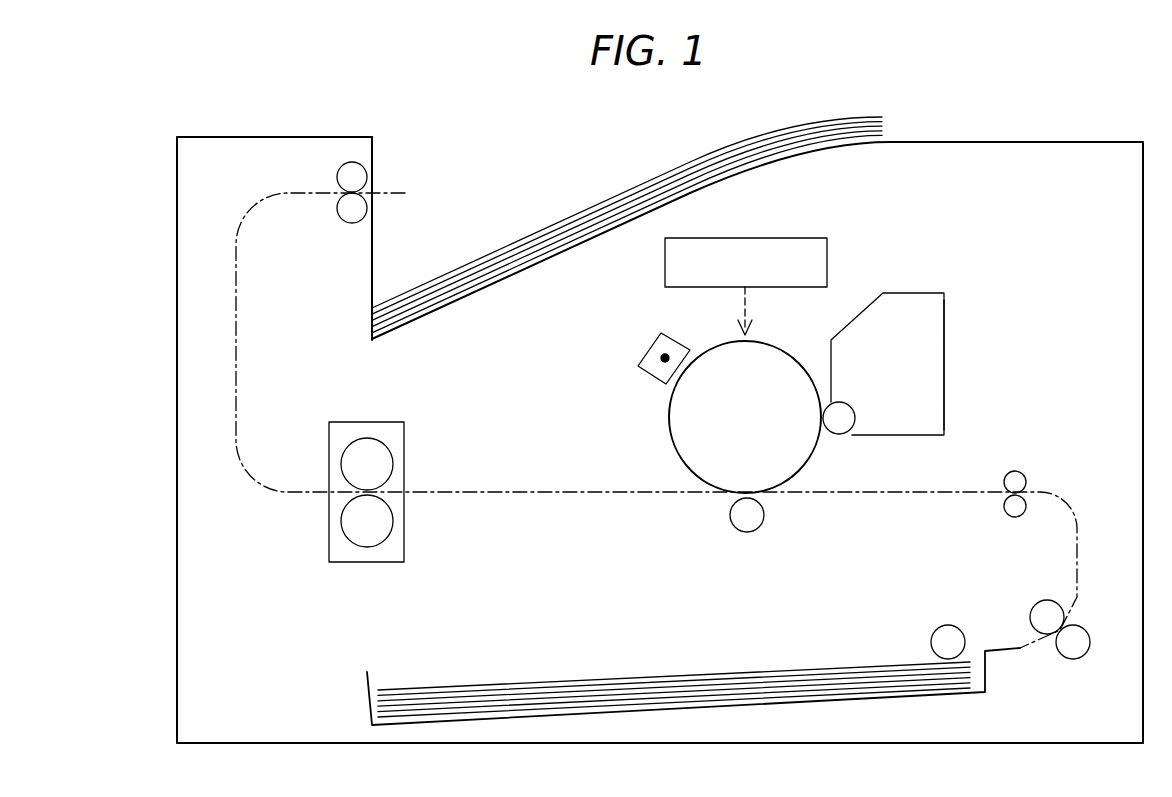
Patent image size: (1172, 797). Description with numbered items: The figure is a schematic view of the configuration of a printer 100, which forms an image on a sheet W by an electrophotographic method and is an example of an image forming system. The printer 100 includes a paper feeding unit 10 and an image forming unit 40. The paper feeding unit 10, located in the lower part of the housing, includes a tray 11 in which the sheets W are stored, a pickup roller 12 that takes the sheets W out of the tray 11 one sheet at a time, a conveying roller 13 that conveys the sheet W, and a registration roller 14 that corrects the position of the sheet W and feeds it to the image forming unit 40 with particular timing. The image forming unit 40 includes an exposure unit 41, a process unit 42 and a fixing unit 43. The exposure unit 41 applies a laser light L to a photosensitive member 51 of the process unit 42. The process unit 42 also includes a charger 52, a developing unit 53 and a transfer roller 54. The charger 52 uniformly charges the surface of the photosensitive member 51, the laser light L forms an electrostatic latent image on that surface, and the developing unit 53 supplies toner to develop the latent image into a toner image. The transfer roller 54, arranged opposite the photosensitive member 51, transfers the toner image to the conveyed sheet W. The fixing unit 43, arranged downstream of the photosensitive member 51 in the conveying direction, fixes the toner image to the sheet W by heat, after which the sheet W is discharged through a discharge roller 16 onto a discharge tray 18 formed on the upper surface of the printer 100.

The printer 100 is at (1008, 100).
The paper feeding unit 10 is at (693, 706).
The tray 11 is at (746, 706).
The pickup roller 12 is at (932, 638).
The conveying roller 13 is at (1085, 635).
The registration roller 14 is at (1026, 493).
The discharge roller 16 is at (370, 160).
The discharge tray 18 is at (570, 218).
The image forming unit 40 is at (1030, 210).
The exposure unit 41 is at (748, 248).
The process unit 42 is at (862, 280).
The fixing unit 43 is at (347, 422).
The photosensitive member 51 is at (798, 455).
The charger 52 is at (645, 345).
The developing unit 53 is at (935, 362).
The transfer roller 54 is at (765, 520).
The laser light L is at (752, 311).
The sheet W is at (651, 688).